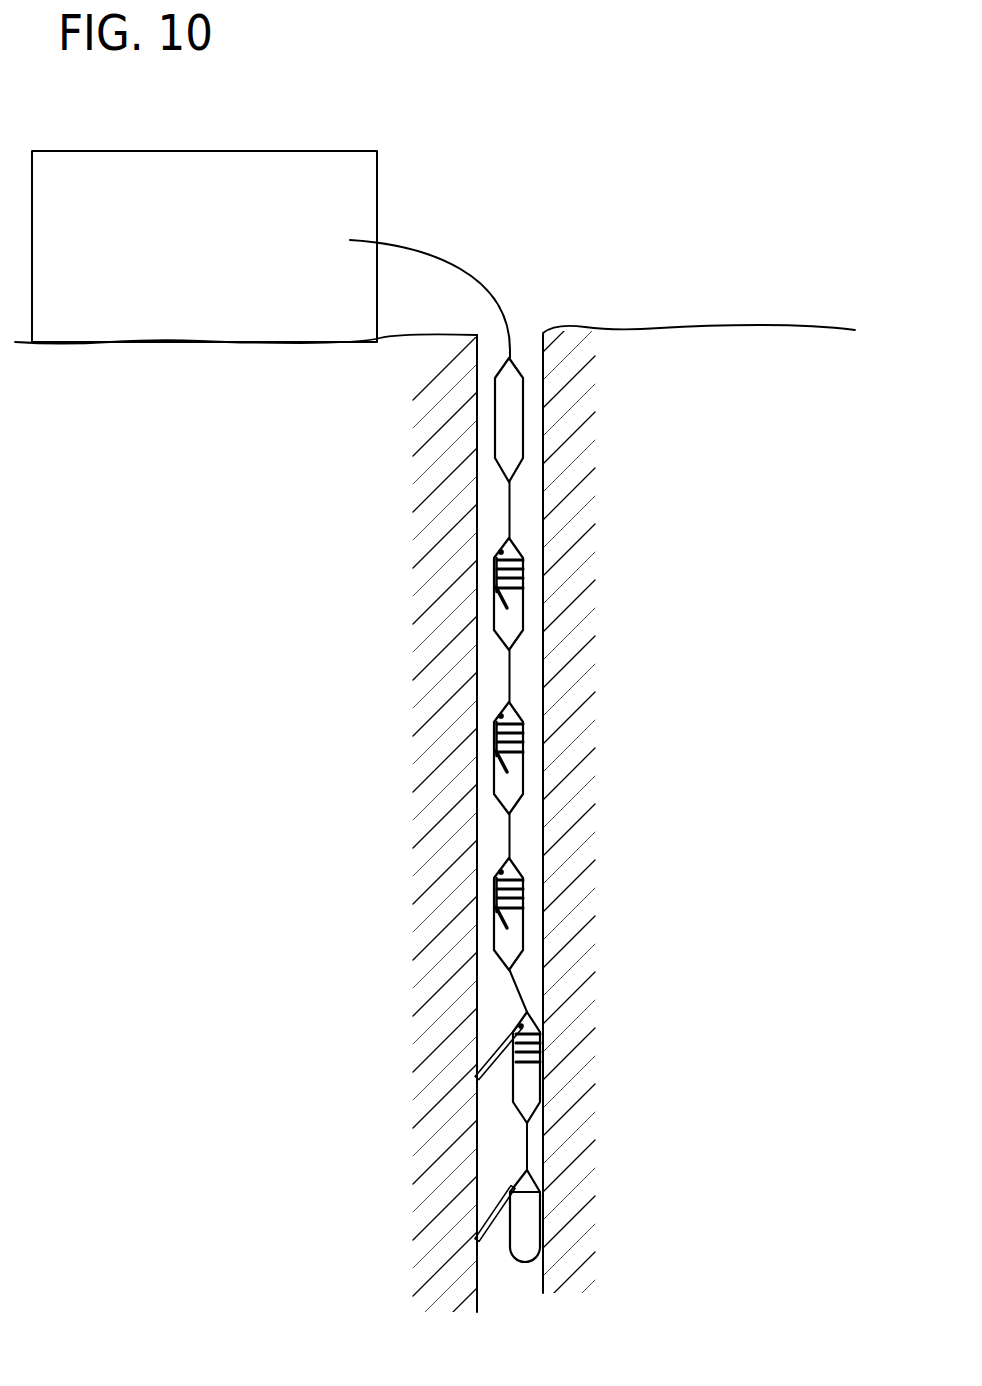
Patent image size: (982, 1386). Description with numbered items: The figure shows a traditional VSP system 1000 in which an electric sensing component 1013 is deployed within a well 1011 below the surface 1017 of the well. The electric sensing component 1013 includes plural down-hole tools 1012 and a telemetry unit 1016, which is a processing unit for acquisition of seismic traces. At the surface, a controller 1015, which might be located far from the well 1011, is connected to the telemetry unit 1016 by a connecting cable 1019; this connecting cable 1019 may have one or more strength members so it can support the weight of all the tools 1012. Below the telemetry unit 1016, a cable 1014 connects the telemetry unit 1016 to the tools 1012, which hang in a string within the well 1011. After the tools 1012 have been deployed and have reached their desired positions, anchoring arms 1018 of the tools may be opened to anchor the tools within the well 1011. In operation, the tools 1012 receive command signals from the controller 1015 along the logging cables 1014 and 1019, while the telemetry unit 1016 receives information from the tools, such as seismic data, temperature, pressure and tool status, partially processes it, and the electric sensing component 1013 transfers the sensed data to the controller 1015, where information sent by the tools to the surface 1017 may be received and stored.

The VSP system 1000 is at (498, 669).
The well 1011 is at (512, 498).
The down-hole tools 1012 is at (524, 615).
The electric sensing component 1013 is at (676, 196).
The cable 1014 is at (508, 840).
The controller 1015 is at (240, 173).
The telemetry unit 1016 is at (525, 410).
The surface 1017 is at (708, 328).
The anchoring arms 1018 is at (495, 1057).
The connecting cable 1019 is at (455, 265).